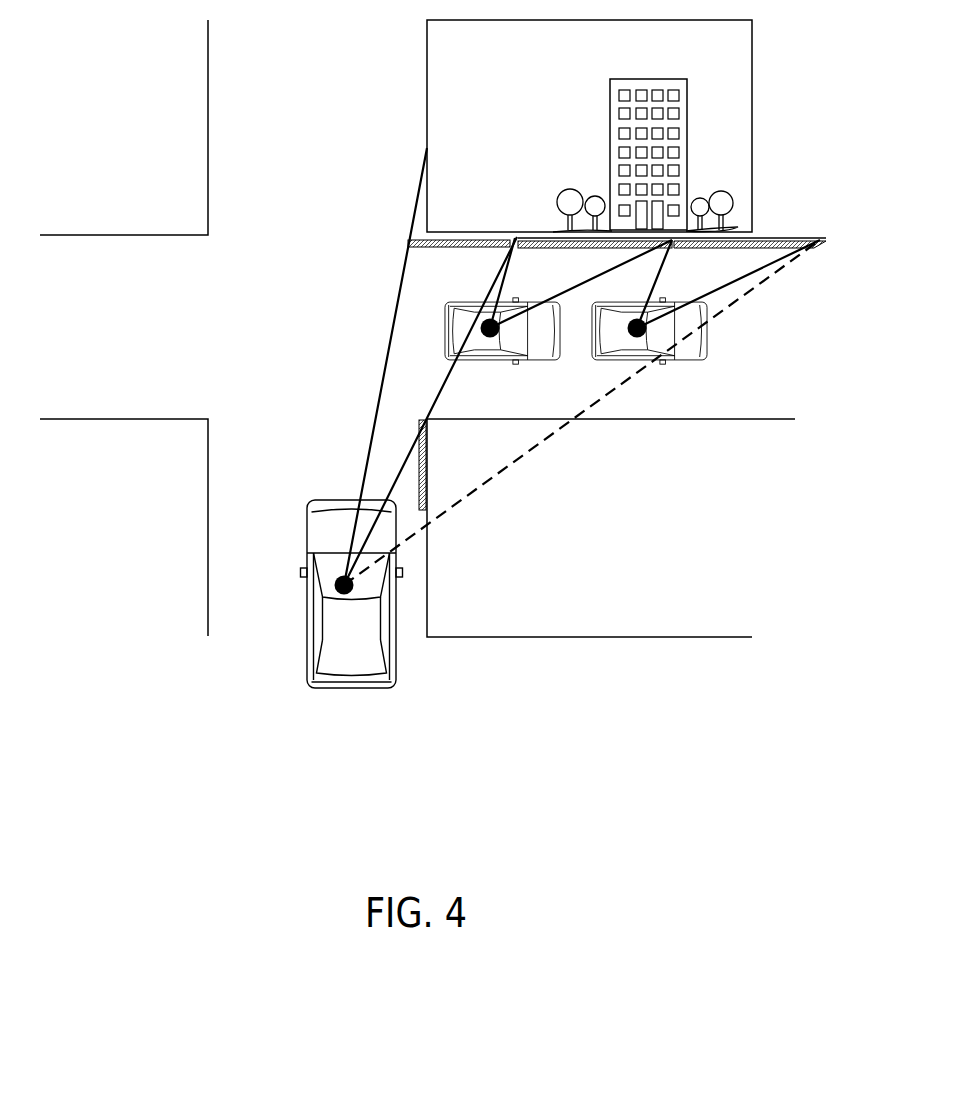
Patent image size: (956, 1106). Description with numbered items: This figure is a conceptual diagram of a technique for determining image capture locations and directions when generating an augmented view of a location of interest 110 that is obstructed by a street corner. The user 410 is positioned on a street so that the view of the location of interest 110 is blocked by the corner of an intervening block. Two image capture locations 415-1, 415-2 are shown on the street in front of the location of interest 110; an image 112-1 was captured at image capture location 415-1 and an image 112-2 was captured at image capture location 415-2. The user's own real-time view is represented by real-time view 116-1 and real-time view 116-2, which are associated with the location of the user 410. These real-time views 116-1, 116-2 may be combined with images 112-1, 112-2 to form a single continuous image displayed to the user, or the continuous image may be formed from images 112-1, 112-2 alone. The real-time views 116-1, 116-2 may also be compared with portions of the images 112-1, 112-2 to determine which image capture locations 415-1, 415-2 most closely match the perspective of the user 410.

The location of interest 110 is at (722, 126).
The image 112-1 is at (591, 250).
The image 112-2 is at (744, 250).
The real-time view 116-1 is at (443, 248).
The real-time view 116-2 is at (427, 436).
The user 410 is at (305, 606).
The image capture location 415-1 is at (483, 360).
The image capture location 415-2 is at (627, 359).